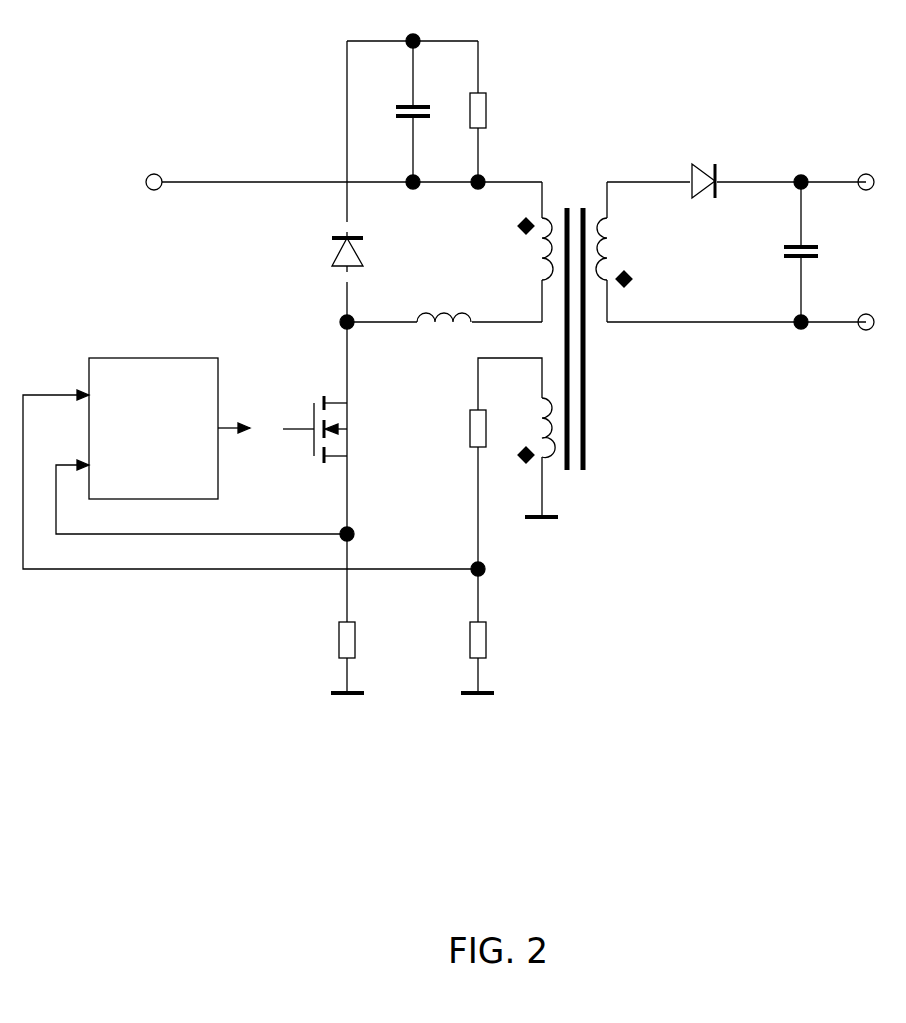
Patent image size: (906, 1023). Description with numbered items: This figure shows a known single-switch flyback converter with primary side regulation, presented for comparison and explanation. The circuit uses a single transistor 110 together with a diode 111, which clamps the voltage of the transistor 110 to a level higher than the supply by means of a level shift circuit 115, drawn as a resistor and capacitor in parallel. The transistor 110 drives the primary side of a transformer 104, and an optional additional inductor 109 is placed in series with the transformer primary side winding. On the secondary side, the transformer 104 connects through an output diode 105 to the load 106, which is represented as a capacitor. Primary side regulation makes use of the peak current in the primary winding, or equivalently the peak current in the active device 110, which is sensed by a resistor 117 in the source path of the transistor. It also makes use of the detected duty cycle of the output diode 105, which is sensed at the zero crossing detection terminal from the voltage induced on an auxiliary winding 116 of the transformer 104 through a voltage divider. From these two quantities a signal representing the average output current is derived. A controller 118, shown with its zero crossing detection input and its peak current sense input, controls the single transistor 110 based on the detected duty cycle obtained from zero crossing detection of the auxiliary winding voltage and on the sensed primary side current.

The transformer 104 is at (574, 180).
The output diode 105 is at (704, 160).
The load 106 is at (817, 233).
The additional inductor 109 is at (445, 300).
The transistor 110 is at (363, 447).
The diode 111 is at (330, 269).
The level shift circuit 115 is at (428, 75).
The auxiliary winding 116 is at (558, 480).
The resistor 117 is at (331, 623).
The controller 118 is at (218, 358).